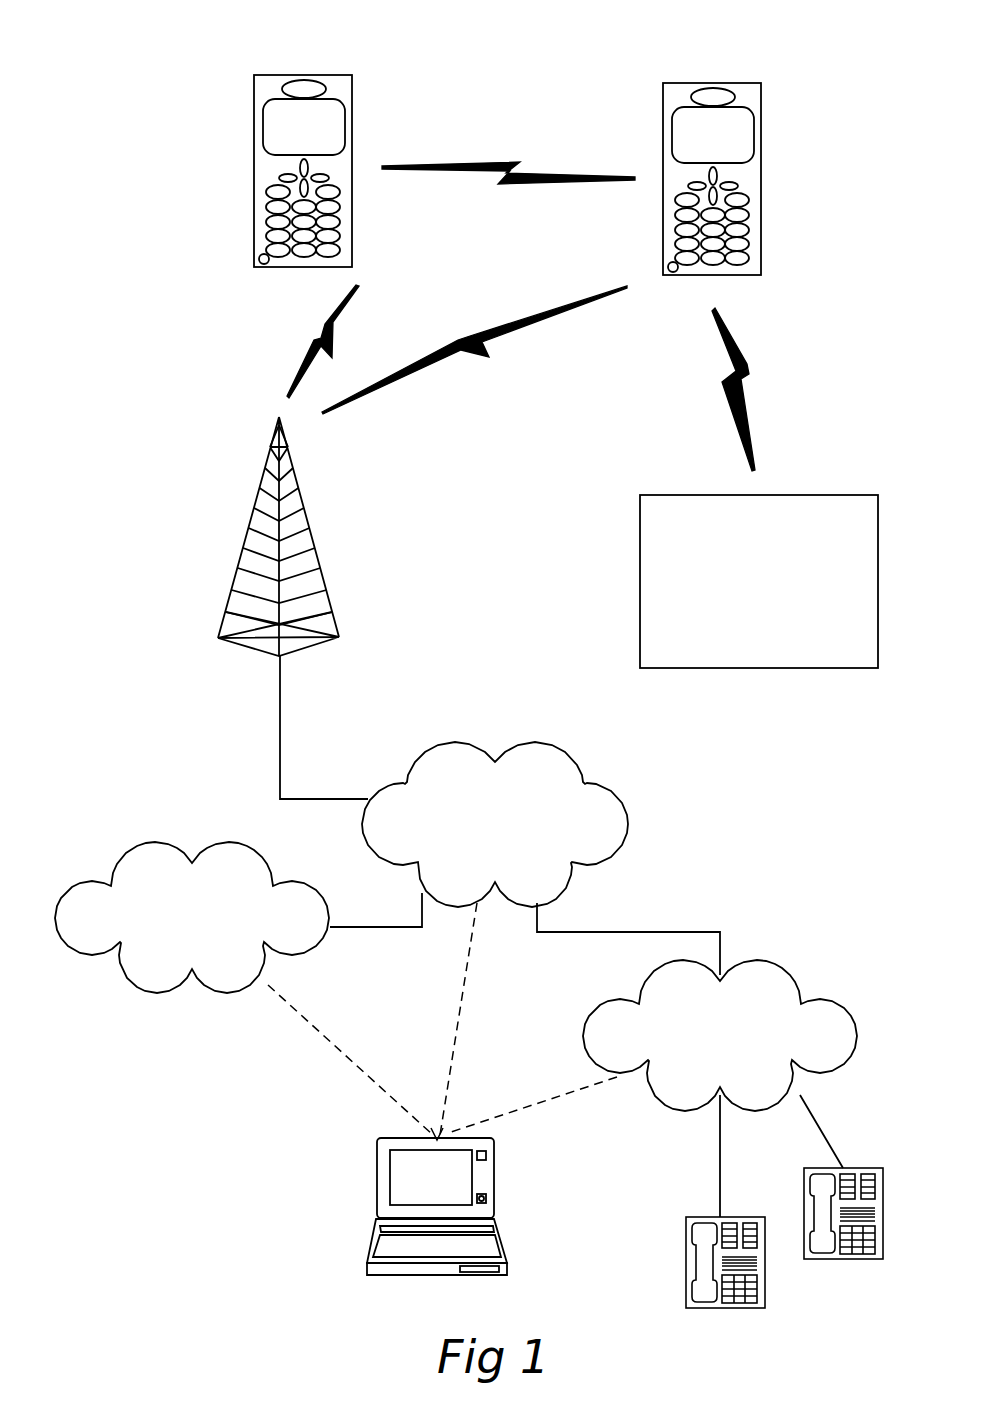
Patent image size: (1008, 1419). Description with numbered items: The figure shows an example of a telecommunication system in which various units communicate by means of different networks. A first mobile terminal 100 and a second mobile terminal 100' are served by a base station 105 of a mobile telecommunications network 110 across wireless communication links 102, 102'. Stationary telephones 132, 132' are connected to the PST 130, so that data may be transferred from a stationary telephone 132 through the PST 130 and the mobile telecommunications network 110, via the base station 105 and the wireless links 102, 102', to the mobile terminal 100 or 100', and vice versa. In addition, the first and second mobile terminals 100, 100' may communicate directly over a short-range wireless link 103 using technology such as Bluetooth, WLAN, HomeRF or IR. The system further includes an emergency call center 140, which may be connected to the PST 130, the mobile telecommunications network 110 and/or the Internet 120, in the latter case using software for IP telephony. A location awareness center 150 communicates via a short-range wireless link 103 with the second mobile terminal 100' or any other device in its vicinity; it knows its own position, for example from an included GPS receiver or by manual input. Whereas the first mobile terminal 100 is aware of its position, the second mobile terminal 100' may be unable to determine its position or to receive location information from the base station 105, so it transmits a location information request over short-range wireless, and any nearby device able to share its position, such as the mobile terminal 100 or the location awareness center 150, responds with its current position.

The first mobile terminal 100 is at (264, 155).
The second mobile terminal 100' is at (673, 163).
The wireless communication link 102 is at (287, 341).
The wireless communication link 102' is at (474, 350).
The short-range wireless link 103 is at (505, 165).
The base station 105 is at (262, 484).
The mobile telecommunications network 110 is at (477, 789).
The Internet 120 is at (174, 899).
The PST 130 is at (702, 1032).
The stationary telephone 132 is at (684, 1262).
The stationary telephone 132' is at (856, 1178).
The emergency call center 140 is at (388, 1247).
The location awareness center 150 is at (741, 564).